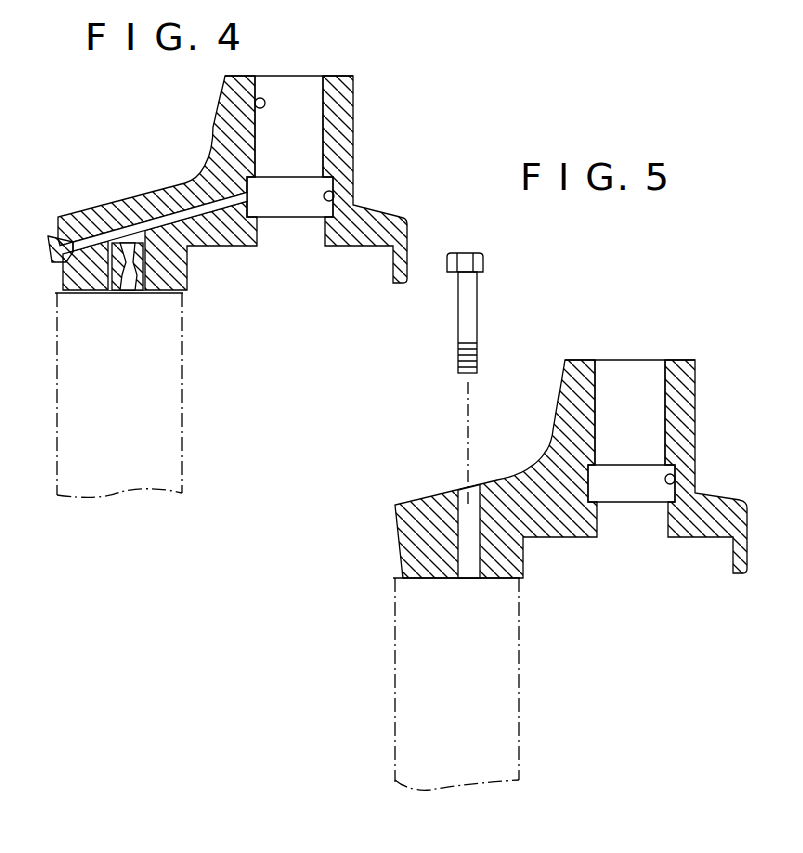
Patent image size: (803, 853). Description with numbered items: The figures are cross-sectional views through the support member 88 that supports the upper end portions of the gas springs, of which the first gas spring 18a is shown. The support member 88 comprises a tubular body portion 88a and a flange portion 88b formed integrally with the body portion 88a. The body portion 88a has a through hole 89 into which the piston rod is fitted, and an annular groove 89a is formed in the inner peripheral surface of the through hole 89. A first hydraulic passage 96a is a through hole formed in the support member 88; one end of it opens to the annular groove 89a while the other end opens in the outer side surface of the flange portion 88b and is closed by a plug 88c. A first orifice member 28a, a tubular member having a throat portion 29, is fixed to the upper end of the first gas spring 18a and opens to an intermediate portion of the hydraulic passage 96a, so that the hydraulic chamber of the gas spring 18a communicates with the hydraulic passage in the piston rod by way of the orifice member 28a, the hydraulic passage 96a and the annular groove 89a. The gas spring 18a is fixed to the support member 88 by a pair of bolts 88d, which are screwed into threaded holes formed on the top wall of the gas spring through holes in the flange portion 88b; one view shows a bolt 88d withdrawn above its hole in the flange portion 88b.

In FIG. 4, the support member 88 is at (252, 182).
In FIG. 5, the support member 88 is at (578, 441).
In FIG. 4, the tubular body portion 88a is at (357, 148).
In FIG. 5, the tubular body portion 88a is at (688, 421).
In FIG. 4, the flange portion 88b is at (90, 207).
In FIG. 5, the flange portion 88b is at (517, 473).
In FIG. 4, the plug 88c is at (50, 240).
In FIG. 5, the bolt 88d is at (478, 253).
In FIG. 4, the through hole 89 is at (256, 103).
In FIG. 5, the through hole 89 is at (598, 383).
In FIG. 4, the annular groove 89a is at (333, 203).
In FIG. 5, the annular groove 89a is at (672, 482).
In FIG. 4, the first hydraulic passage 96a is at (163, 217).
In FIG. 4, the throat portion 29 is at (140, 252).
In FIG. 4, the first orifice member 28a is at (143, 293).
In FIG. 4, the first gas spring 18a is at (166, 419).
In FIG. 5, the first gas spring 18a is at (503, 700).